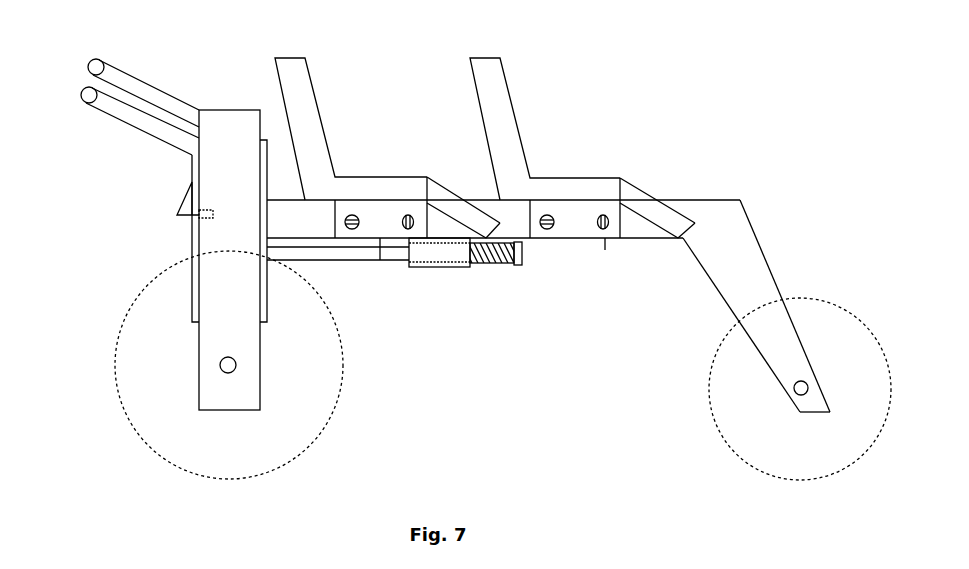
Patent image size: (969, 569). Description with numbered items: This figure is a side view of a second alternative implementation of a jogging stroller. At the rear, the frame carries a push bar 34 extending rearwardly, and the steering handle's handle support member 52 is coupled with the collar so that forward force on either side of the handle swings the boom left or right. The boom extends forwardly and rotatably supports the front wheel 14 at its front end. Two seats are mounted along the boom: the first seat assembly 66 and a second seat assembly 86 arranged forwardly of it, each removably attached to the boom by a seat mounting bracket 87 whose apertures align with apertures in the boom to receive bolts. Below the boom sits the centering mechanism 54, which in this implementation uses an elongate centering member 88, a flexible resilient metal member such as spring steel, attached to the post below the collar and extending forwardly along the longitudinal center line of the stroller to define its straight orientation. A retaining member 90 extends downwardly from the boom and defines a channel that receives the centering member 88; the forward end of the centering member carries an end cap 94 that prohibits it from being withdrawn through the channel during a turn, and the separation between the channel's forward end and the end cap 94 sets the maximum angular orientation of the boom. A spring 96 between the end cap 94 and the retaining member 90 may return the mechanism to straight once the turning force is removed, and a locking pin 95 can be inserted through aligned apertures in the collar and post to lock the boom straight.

The front wheel 14 is at (709, 389).
The push bar 34 is at (120, 63).
The handle support member 52 is at (140, 132).
The centering mechanism 54 is at (412, 300).
The seat assembly 66 is at (386, 110).
The second seat assembly 86 is at (612, 110).
The seat mounting bracket 87 is at (380, 260).
The centering member 88 is at (365, 260).
The retaining member 90 is at (453, 268).
The end cap 94 is at (518, 264).
The locking pin 95 is at (168, 196).
The spring 96 is at (493, 263).